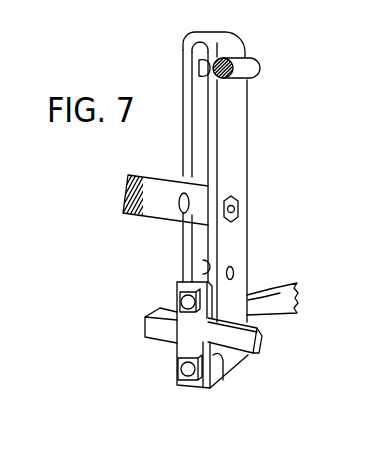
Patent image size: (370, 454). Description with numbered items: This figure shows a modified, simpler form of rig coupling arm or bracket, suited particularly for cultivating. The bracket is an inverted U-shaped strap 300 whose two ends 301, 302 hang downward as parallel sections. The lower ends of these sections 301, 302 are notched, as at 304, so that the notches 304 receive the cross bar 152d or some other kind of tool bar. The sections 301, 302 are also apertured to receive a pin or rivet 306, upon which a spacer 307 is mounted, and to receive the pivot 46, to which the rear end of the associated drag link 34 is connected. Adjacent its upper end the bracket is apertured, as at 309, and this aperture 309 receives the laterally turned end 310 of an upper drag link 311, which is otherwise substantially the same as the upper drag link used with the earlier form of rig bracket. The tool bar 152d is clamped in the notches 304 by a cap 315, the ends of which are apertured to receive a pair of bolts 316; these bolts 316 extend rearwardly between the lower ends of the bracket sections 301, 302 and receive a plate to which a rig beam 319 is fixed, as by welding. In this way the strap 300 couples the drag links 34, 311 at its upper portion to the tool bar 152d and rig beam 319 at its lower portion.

The inverted U-shaped strap 300 is at (254, 100).
The laterally turned end 310 is at (183, 60).
The end of strap 301 is at (192, 132).
The end of strap 302 is at (243, 131).
The aperture 309 is at (200, 70).
The upper drag link 311 is at (246, 66).
The drag link 34 is at (157, 210).
The pivot 46 is at (238, 203).
The spacer 307 is at (200, 267).
The pin or rivet 306 is at (233, 274).
The rig beam 319 is at (277, 298).
The cap 315 is at (182, 348).
The cross bar 152d is at (255, 347).
The notch 304 is at (220, 357).
The bolt 316 is at (185, 303).